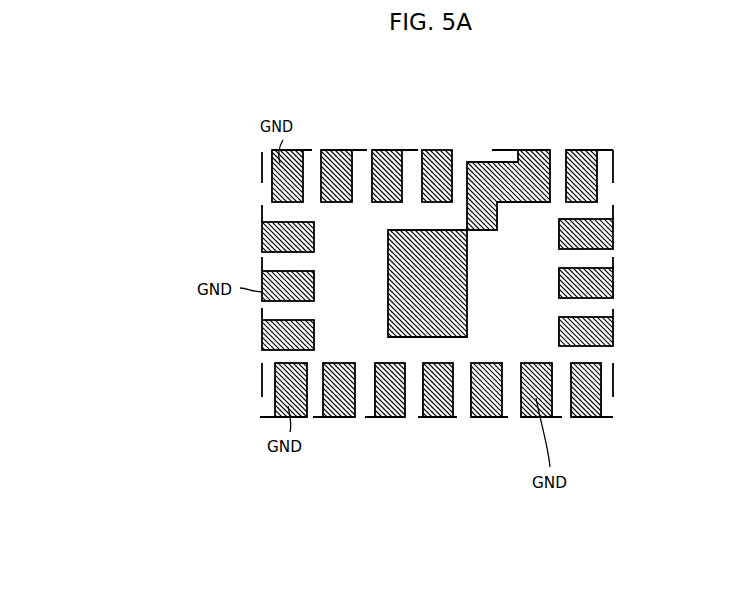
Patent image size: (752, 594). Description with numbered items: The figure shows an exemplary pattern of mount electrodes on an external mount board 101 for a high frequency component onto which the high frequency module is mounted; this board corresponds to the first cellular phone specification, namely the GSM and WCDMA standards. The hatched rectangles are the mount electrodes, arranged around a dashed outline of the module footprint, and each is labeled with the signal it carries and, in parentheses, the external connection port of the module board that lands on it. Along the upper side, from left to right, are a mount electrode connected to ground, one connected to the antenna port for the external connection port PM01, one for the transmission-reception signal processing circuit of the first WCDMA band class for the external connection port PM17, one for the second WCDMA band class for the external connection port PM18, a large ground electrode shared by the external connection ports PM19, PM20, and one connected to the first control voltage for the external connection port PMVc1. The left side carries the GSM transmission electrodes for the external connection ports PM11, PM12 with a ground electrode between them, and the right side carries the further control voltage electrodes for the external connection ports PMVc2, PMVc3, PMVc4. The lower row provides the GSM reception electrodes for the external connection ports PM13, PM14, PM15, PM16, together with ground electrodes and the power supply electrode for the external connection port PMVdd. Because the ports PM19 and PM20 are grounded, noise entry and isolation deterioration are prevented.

The external mount board 101 is at (218, 156).
The external connection port PM01 is at (337, 163).
The external connection port PM11 is at (266, 240).
The external connection port PM12 is at (266, 342).
The external connection port PM13 is at (333, 398).
The external connection port PM14 is at (385, 398).
The external connection port PM15 is at (437, 398).
The external connection port PM16 is at (486, 398).
The external connection port PM17 is at (382, 163).
The external connection port PM18 is at (435, 163).
The external connection port PM19 is at (495, 216).
The external connection port PM20 is at (548, 163).
The external connection port PMVc1 is at (601, 168).
The external connection port PMVc2 is at (608, 236).
The external connection port PMVc3 is at (608, 284).
The external connection port PMVc4 is at (608, 333).
The external connection port PMVdd is at (588, 398).